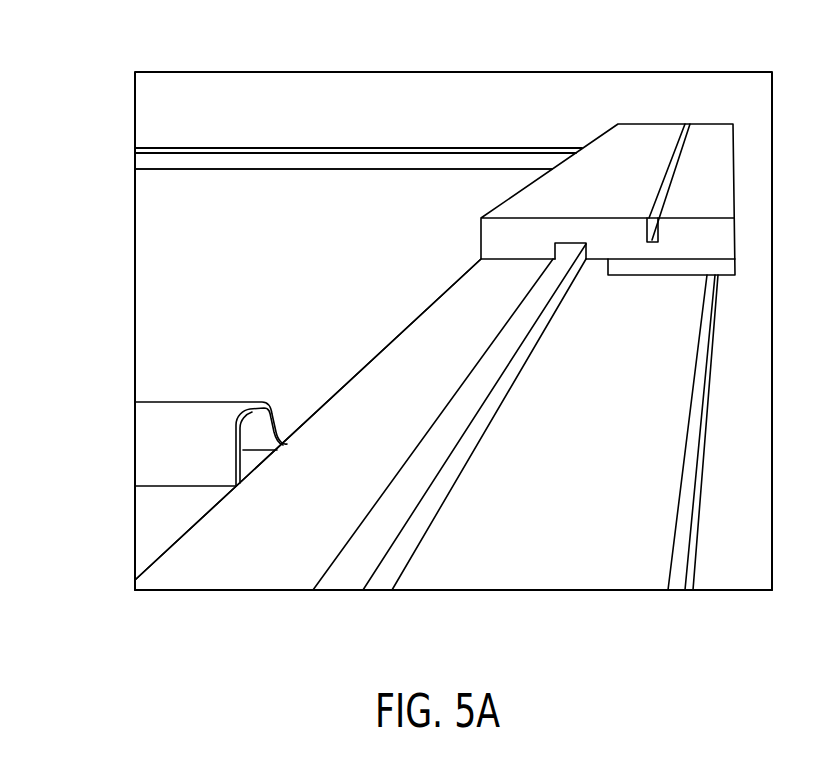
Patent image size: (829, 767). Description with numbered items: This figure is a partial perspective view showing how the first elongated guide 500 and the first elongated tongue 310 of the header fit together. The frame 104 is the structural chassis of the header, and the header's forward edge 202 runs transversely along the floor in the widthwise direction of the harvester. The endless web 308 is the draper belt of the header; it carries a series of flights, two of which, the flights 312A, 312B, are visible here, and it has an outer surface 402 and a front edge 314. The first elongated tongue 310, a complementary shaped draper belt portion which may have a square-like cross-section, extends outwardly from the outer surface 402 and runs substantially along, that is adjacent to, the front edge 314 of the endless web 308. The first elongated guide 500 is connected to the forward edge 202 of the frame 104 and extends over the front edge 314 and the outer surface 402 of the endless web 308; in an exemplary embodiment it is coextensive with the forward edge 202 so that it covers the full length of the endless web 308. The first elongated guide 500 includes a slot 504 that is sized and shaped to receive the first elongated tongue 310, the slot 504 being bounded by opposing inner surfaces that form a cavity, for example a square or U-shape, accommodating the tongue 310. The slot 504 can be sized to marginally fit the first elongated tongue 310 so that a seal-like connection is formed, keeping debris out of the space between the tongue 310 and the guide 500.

The frame 104 is at (577, 530).
The forward edge 202 is at (657, 528).
The endless web 308 is at (162, 267).
The first elongated tongue 310 is at (342, 567).
The flight 312A is at (165, 452).
The flight 312B is at (230, 147).
The front edge 314 is at (417, 557).
The outer surface 402 is at (382, 195).
The first elongated guide 500 is at (628, 147).
The slot 504 is at (570, 247).